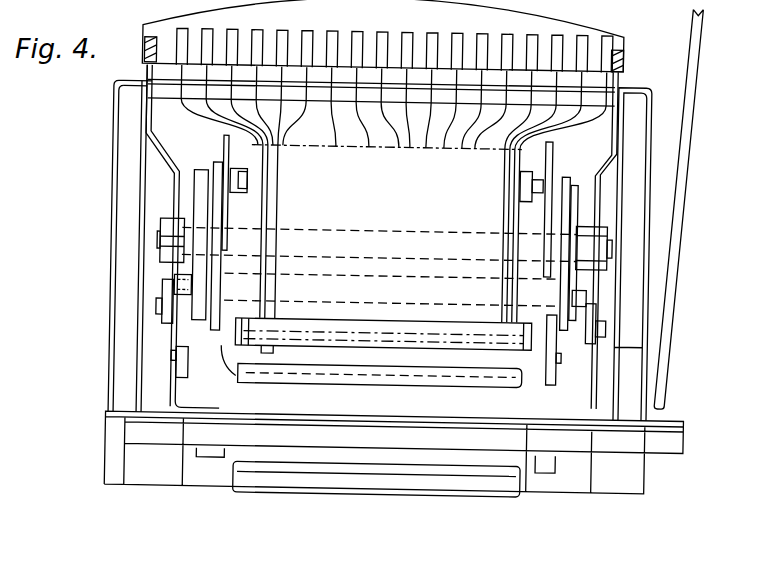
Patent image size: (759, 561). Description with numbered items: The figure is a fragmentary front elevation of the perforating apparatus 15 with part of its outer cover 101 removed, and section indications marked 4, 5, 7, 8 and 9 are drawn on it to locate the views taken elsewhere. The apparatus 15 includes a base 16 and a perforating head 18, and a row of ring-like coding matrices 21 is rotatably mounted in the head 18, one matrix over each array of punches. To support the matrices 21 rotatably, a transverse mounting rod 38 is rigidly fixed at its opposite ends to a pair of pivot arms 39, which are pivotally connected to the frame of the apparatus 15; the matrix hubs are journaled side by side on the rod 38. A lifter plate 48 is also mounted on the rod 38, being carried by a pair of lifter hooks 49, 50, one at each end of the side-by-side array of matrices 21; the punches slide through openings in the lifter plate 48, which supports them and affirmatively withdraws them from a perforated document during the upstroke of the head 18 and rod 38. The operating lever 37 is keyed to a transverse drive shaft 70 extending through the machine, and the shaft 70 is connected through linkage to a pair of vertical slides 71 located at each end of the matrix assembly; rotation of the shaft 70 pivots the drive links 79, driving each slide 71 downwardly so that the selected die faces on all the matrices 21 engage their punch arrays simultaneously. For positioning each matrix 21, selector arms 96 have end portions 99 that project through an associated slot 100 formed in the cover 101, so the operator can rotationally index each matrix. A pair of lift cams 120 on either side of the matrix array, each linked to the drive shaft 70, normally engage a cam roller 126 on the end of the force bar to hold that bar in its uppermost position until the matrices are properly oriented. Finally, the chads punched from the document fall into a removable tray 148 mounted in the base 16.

The section line 4- 4 is at (244, 202).
The section line 5- 5 is at (644, 15).
The section line 7- 7 is at (584, 13).
The section line 8- 8 is at (128, 349).
The section line 9- 9 is at (393, 22).
The perforating apparatus 15 is at (110, 131).
The base 16 is at (669, 422).
The perforating head 18 is at (191, 162).
The coding matrices 21 is at (276, 239).
The operating lever 37 is at (676, 212).
The transverse mounting rod 38 is at (597, 246).
The pivot arms 39 is at (224, 172).
The lifter plate 48 is at (430, 380).
The lifter hook 49 is at (225, 373).
The lifter hook 50 is at (532, 390).
The transverse drive shaft 70 is at (634, 360).
The vertical slides 71 is at (214, 161).
The drive links 79 is at (201, 187).
The selector arms 96 is at (453, 143).
The end portions 99 is at (463, 70).
The slot 100 is at (143, 73).
The cover 101 is at (111, 222).
The lift cam 120 is at (174, 332).
The cam roller 126 is at (168, 284).
The removable tray 148 is at (300, 481).